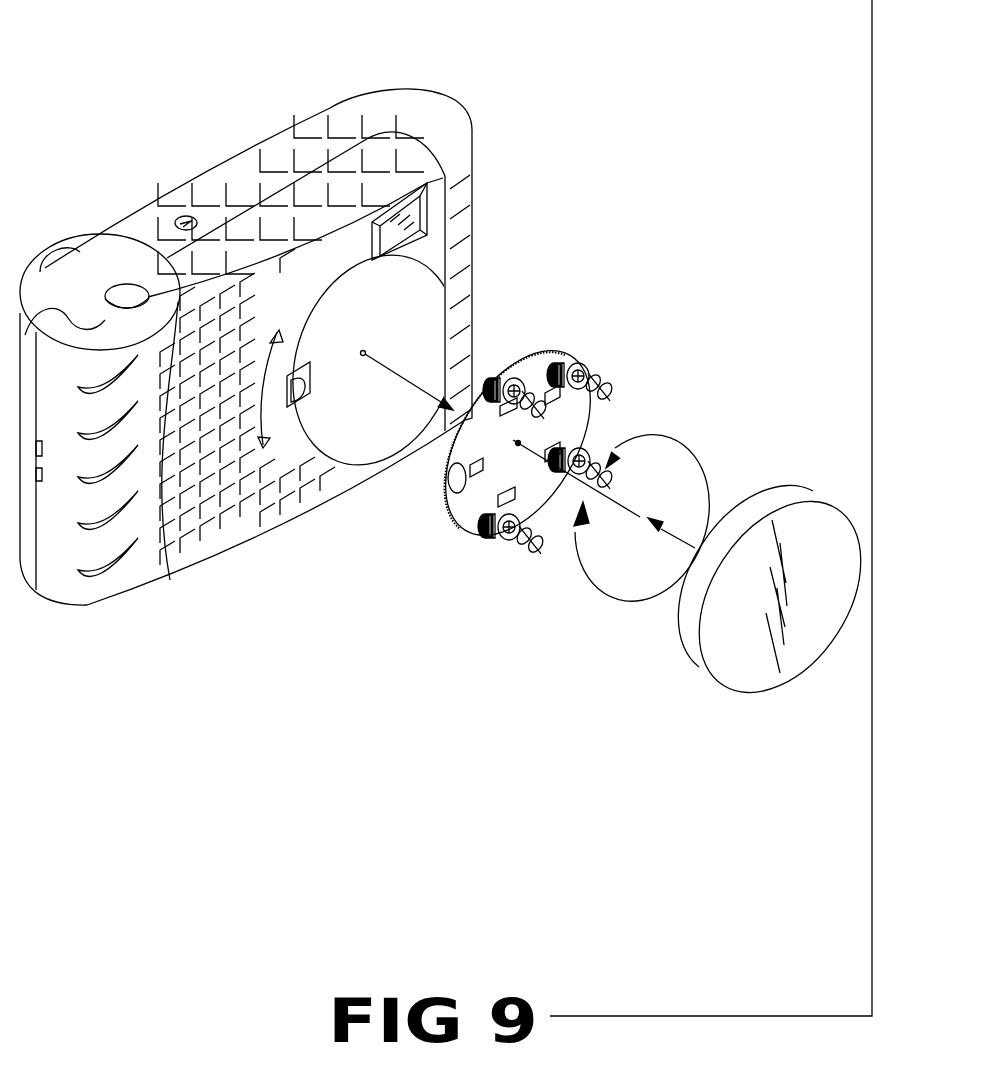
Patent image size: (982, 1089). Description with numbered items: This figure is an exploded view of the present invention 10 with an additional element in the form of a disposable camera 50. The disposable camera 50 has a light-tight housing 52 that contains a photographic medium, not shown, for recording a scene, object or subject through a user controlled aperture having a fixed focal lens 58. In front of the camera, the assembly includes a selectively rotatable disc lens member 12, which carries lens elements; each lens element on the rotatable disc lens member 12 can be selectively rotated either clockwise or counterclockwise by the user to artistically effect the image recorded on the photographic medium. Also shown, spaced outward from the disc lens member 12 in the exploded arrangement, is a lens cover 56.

The present invention 10 is at (618, 323).
The rotatable disc lens member 12 is at (465, 510).
The disposable camera 50 is at (322, 107).
The light-tight housing 52 is at (402, 100).
The lens cover 56 is at (727, 658).
The fixed focal lens 58 is at (303, 300).